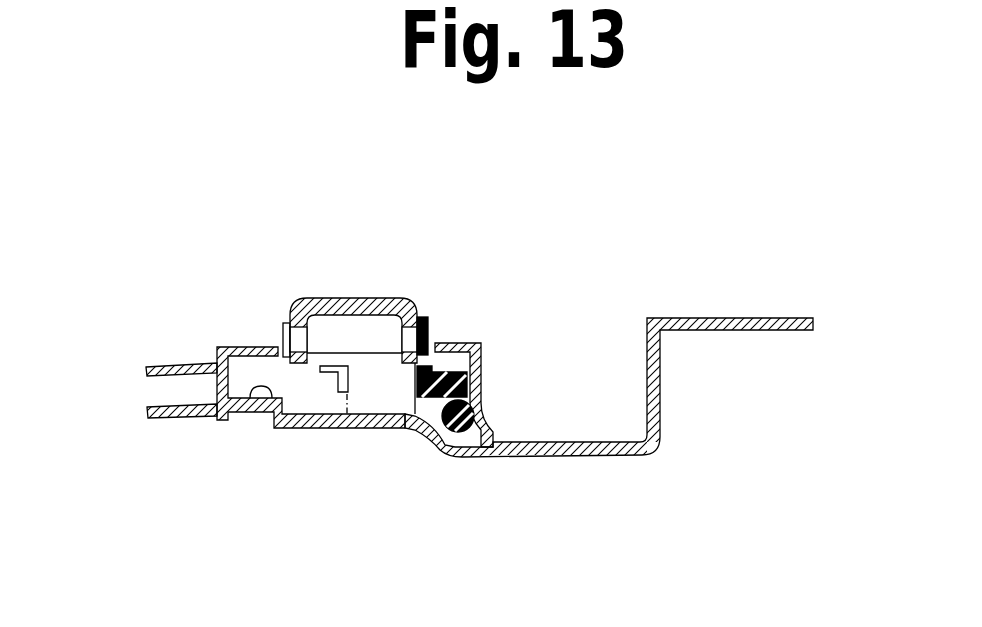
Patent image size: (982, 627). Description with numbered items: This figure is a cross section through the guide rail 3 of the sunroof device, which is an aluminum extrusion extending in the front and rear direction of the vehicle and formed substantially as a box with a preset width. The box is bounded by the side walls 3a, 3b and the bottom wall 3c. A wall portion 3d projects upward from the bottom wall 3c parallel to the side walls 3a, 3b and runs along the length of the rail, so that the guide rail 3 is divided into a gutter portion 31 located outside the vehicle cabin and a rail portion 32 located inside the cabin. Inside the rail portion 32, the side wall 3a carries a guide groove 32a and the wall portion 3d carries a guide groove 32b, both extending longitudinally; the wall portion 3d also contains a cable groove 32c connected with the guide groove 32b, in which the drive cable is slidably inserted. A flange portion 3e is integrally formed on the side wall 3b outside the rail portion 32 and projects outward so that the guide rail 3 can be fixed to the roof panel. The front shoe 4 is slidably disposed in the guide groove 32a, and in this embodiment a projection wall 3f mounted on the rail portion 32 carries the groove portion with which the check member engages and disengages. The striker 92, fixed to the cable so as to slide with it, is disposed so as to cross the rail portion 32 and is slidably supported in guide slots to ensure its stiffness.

The guide rail 3 is at (562, 457).
The side wall 3a is at (216, 355).
The side wall 3b is at (662, 387).
The bottom wall 3c is at (610, 455).
The wall portion 3d is at (483, 355).
The flange portion 3e is at (730, 323).
The projection wall 3f is at (341, 388).
The front shoe 4 is at (313, 297).
The gutter portion 31 is at (590, 343).
The rail portion 32 is at (268, 312).
The guide groove 32a is at (250, 398).
The guide groove 32b is at (450, 363).
The cable groove 32c is at (465, 433).
The striker 92 is at (352, 337).